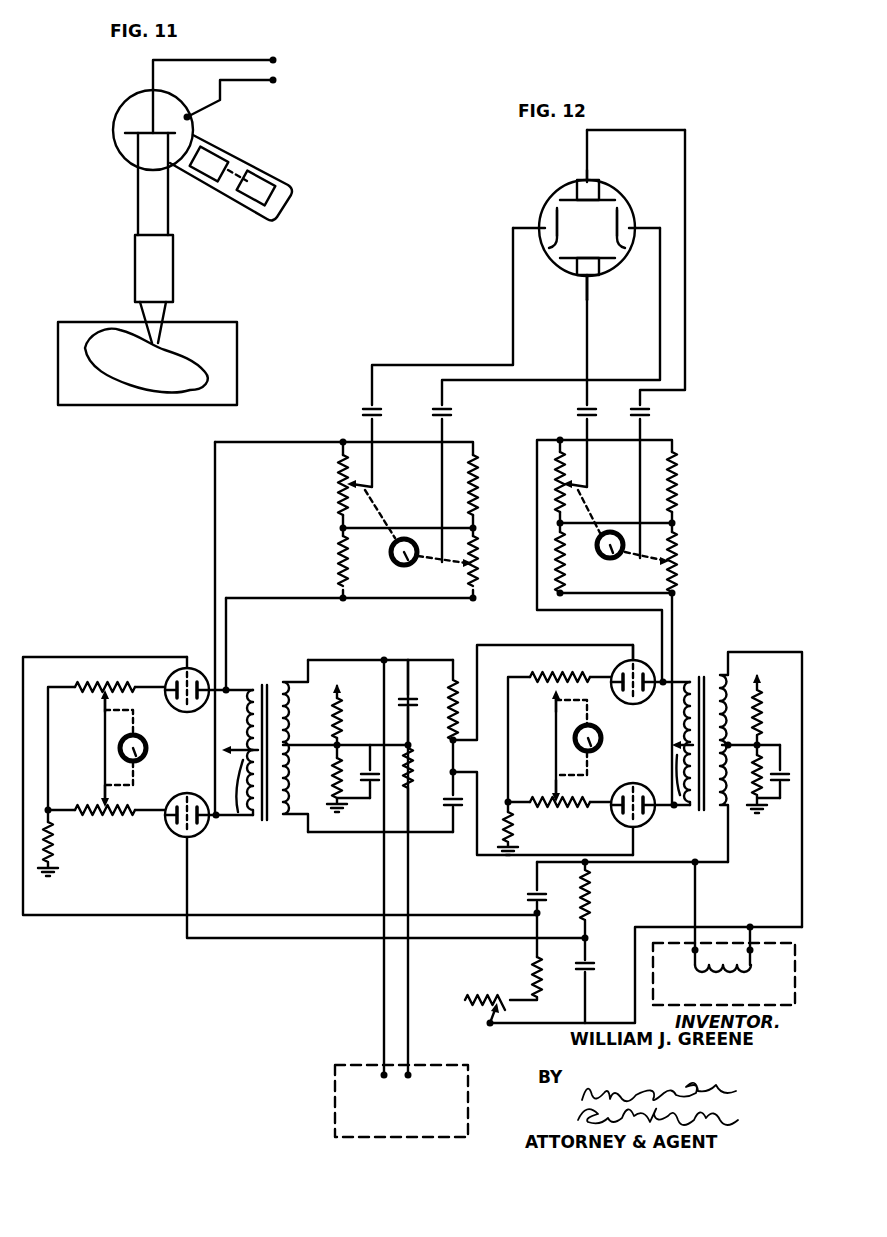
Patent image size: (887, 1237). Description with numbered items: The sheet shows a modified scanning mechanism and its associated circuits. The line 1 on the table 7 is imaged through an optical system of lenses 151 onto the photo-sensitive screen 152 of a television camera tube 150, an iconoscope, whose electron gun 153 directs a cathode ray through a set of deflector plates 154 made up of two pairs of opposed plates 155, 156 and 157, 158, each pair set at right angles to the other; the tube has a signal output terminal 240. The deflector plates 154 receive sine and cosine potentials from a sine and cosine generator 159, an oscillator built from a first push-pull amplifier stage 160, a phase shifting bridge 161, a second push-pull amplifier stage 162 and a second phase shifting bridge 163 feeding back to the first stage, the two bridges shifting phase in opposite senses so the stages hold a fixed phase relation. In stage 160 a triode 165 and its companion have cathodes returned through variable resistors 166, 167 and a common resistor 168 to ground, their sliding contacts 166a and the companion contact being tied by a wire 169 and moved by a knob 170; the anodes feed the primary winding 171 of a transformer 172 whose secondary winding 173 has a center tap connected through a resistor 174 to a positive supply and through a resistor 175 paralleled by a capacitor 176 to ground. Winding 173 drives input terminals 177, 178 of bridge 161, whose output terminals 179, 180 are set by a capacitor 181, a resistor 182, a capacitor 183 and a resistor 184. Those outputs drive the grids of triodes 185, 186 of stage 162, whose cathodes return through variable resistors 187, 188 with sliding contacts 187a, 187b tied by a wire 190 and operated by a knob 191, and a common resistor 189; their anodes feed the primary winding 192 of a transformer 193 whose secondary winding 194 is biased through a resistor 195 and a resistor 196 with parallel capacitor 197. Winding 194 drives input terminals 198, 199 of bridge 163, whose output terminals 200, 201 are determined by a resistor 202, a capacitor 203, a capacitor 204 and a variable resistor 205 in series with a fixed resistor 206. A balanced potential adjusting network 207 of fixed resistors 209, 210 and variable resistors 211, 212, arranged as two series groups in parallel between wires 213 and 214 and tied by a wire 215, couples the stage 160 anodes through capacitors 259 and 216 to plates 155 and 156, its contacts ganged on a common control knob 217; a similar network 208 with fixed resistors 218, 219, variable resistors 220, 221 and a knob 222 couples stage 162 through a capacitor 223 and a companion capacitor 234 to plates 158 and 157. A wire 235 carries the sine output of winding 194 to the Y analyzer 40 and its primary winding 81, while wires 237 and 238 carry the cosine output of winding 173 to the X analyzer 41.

In FIG. 11, the line 1 is at (96, 341).
In FIG. 11, the table 7 is at (230, 322).
In FIG. 12, the Y analyzer 40 is at (724, 984).
In FIG. 12, the X analyzer 41 is at (330, 1077).
In FIG. 12, the primary winding 81 is at (700, 967).
In FIG. 11, the television camera tube 150 is at (200, 132).
In FIG. 12, the television camera tube 150 is at (575, 285).
In FIG. 11, the optical system of lenses 151 is at (173, 272).
In FIG. 11, the photo-sensitive screen 152 is at (134, 110).
In FIG. 11, the electron gun 153 is at (262, 205).
In FIG. 11, the deflector plates 154 is at (213, 175).
In FIG. 12, the deflector plates 154 is at (549, 184).
In FIG. 12, the deflector plate 155 is at (558, 282).
In FIG. 12, the deflector plate 156 is at (612, 265).
In FIG. 12, the deflector plate 157 is at (597, 190).
In FIG. 12, the deflector plate 158 is at (596, 284).
In FIG. 12, the sine and cosine generator 159 is at (278, 767).
In FIG. 12, the first amplifier stage 160 is at (304, 797).
In FIG. 12, the phase shifting bridge 161 is at (462, 853).
In FIG. 12, the second push-pull amplifier stage 162 is at (387, 736).
In FIG. 12, the phase shifting bridge 163 is at (629, 943).
In FIG. 12, the triode 165 is at (204, 782).
In FIG. 12, the variable resistor 166 is at (86, 680).
In FIG. 12, the sliding contact 166a is at (105, 696).
In FIG. 12, the variable resistor 167 is at (100, 815).
In FIG. 12, the common resistor 168 is at (54, 843).
In FIG. 12, the wire 169 is at (104, 750).
In FIG. 12, the knob 170 is at (135, 763).
In FIG. 12, the primary winding 171 is at (258, 738).
In FIG. 12, the transformer 172 is at (254, 690).
In FIG. 12, the secondary winding 173 is at (285, 730).
In FIG. 12, the resistor 174 is at (355, 708).
In FIG. 12, the resistor 175 is at (334, 785).
In FIG. 12, the capacitor 176 is at (372, 768).
In FIG. 12, the input terminal 177 is at (404, 647).
In FIG. 12, the input terminal 178 is at (406, 833).
In FIG. 12, the output terminal 179 is at (408, 740).
In FIG. 12, the output terminal 180 is at (456, 770).
In FIG. 12, the capacitor 181 is at (408, 695).
In FIG. 12, the resistor 182 is at (455, 690).
In FIG. 12, the capacitor 183 is at (462, 812).
In FIG. 12, the resistor 184 is at (410, 785).
In FIG. 12, the triode 185 is at (640, 660).
In FIG. 12, the triode 186 is at (640, 830).
In FIG. 12, the variable resistor 187 is at (578, 673).
In FIG. 12, the sliding contact 187a is at (95, 790).
In FIG. 12, the sliding contact 187b is at (532, 780).
In FIG. 12, the variable resistor 188 is at (562, 810).
In FIG. 12, the common resistor 189 is at (520, 830).
In FIG. 12, the wire 190 is at (556, 737).
In FIG. 12, the knob 191 is at (598, 732).
In FIG. 12, the primary winding 192 is at (686, 678).
In FIG. 12, the transformer 193 is at (715, 680).
In FIG. 12, the secondary winding 194 is at (725, 805).
In FIG. 12, the resistor 195 is at (760, 715).
In FIG. 12, the resistor 196 is at (762, 812).
In FIG. 12, the capacitor 197 is at (782, 770).
In FIG. 12, the input terminal 198 is at (587, 870).
In FIG. 12, the input terminal 199 is at (592, 1022).
In FIG. 12, the output terminal 200 is at (588, 935).
In FIG. 12, the output terminal 201 is at (532, 910).
In FIG. 12, the resistor 202 is at (590, 900).
In FIG. 12, the capacitor 203 is at (532, 882).
In FIG. 12, the capacitor 204 is at (580, 968).
In FIG. 12, the variable resistor 205 is at (500, 998).
In FIG. 12, the fixed resistor 206 is at (535, 970).
In FIG. 12, the balanced potential adjusting network 207 is at (369, 614).
In FIG. 12, the balanced adjusting network 208 is at (628, 621).
In FIG. 12, the fixed resistor 209 is at (340, 575).
In FIG. 12, the fixed resistor 210 is at (476, 488).
In FIG. 12, the variable resistor 211 is at (343, 468).
In FIG. 12, the variable resistor 212 is at (475, 570).
In FIG. 12, the wire 213 is at (305, 428).
In FIG. 12, the wire 214 is at (268, 595).
In FIG. 12, the wire 215 is at (426, 525).
In FIG. 12, the capacitor 216 is at (546, 395).
In FIG. 12, the common control knob 217 is at (403, 568).
In FIG. 12, the fixed resistor 218 is at (563, 572).
In FIG. 12, the fixed resistor 219 is at (676, 480).
In FIG. 12, the variable resistor 220 is at (553, 480).
In FIG. 12, the variable resistor 221 is at (678, 570).
In FIG. 12, the common control knob 222 is at (612, 558).
In FIG. 12, the capacitor 223 is at (578, 408).
In FIG. 12, the capacitor 234 is at (648, 410).
In FIG. 12, the wire 235 is at (697, 910).
In FIG. 12, the wire 237 is at (383, 992).
In FIG. 12, the wire 238 is at (748, 928).
In FIG. 11, the signal output terminal 240 is at (276, 84).
In FIG. 12, the capacitor 259 is at (430, 358).